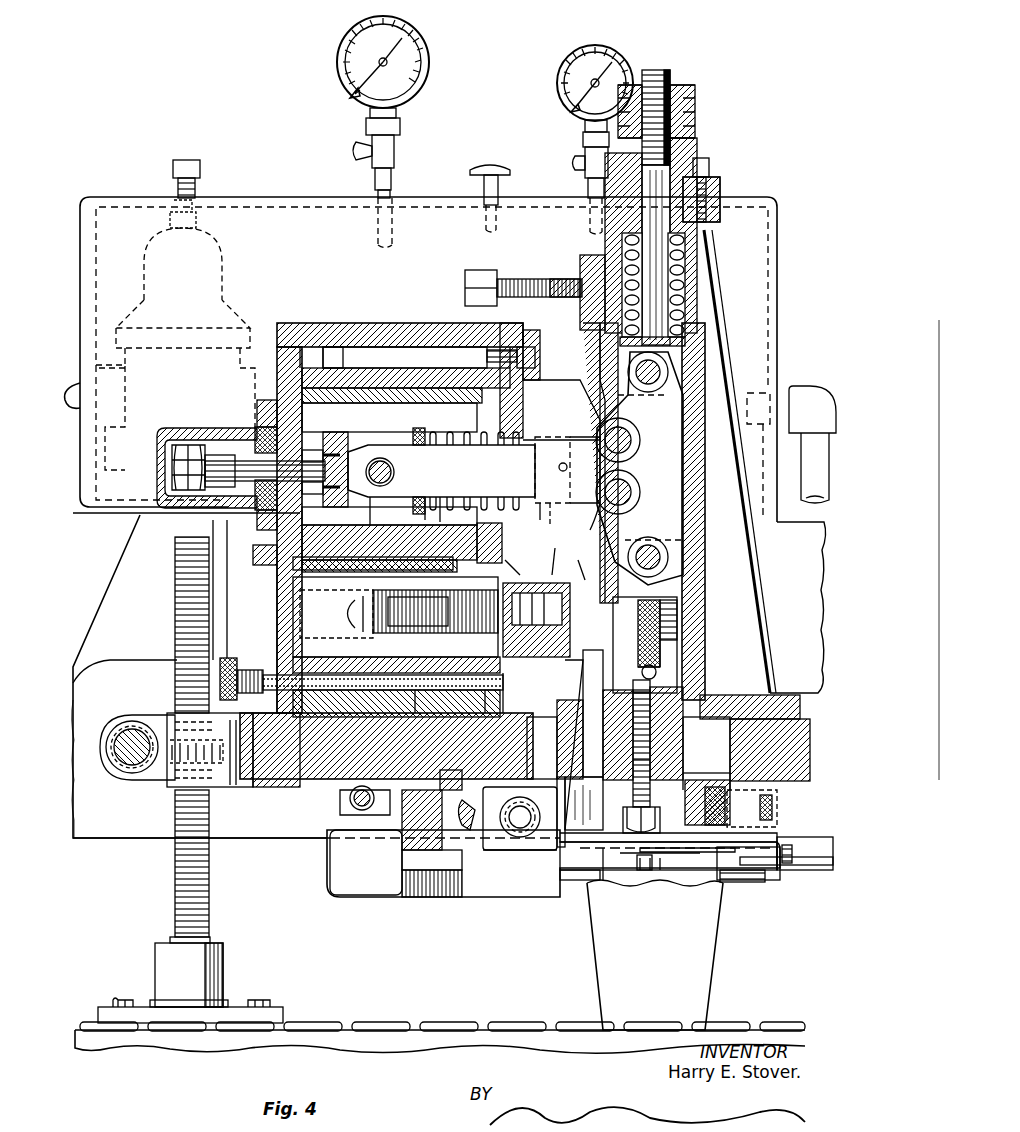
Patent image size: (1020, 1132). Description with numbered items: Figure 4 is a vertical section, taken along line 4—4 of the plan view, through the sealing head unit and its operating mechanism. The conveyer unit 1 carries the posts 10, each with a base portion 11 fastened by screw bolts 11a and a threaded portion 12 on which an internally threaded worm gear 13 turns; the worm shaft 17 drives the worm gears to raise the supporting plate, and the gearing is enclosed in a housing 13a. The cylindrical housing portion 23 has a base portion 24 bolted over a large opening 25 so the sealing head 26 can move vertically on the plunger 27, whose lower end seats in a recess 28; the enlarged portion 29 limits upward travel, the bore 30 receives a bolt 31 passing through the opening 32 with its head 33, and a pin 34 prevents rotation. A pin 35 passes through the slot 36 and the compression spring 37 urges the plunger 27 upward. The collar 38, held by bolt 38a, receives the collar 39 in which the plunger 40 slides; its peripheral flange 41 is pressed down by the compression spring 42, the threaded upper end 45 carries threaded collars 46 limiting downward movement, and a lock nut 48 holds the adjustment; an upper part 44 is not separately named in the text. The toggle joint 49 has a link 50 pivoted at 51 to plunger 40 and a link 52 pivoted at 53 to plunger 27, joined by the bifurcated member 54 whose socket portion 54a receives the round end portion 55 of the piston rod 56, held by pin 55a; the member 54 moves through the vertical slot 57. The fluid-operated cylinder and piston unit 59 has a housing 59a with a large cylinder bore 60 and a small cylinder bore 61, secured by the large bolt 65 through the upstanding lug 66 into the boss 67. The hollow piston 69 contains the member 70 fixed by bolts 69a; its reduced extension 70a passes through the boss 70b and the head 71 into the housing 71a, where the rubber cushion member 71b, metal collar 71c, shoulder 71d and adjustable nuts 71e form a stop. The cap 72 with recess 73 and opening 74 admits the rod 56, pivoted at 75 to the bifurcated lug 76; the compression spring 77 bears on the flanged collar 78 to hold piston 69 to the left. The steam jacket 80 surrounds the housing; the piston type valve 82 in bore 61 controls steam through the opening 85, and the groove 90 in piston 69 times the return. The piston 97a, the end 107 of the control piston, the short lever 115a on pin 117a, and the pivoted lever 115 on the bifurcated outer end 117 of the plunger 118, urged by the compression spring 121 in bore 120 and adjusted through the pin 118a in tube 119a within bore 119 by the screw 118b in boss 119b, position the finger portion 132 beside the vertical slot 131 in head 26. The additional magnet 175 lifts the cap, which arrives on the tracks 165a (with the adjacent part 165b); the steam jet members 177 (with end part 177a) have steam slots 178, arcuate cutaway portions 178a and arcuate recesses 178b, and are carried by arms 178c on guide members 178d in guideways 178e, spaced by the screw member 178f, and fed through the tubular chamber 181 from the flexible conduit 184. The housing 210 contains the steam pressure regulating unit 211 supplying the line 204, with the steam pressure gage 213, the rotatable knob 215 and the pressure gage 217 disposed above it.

The conveyer unit 1 is at (318, 1028).
The receptacle 4 is at (700, 955).
The posts 10 is at (175, 866).
The base portion 11 is at (168, 952).
The screw bolts 11a is at (116, 1000).
The threaded portion 12 is at (178, 595).
The worm gear 13 is at (200, 750).
The housing 13a is at (133, 665).
The worm shaft 17 is at (128, 735).
The cylindrical housing portion 23 is at (713, 292).
The base portion 24 is at (780, 706).
The large opening 25 is at (800, 748).
The sealing head 26 is at (728, 830).
The plunger 27 is at (665, 690).
The recess 28 is at (706, 771).
The enlarged portion 29 is at (706, 745).
The bore 30 is at (635, 740).
The bolt 31 is at (633, 762).
The centrally disposed opening 32 is at (605, 810).
The head 33 is at (637, 828).
The pin 34 is at (688, 855).
The pin 35 is at (655, 668).
The slot 36 is at (660, 640).
The compression spring 37 is at (677, 612).
The collar 38 is at (718, 190).
The bolt 38a is at (706, 180).
The collar 39 is at (690, 144).
The plunger 40 is at (706, 222).
The peripheral flange 41 is at (700, 333).
The compression spring 42 is at (685, 262).
The rod 44 is at (656, 207).
The threaded upper end 45 is at (695, 122).
The threaded collars 46 is at (695, 92).
The lock nut 48 is at (586, 165).
The toggle joint 49 is at (589, 519).
The link 50 is at (690, 410).
The pivotal connection 51 is at (662, 374).
The link 52 is at (648, 520).
The pivotal connection 53 is at (668, 555).
The bifurcated member 54 is at (636, 470).
The socket portion 54a is at (575, 450).
The round end portion 55 is at (557, 517).
The pin 55a is at (559, 465).
The piston rod 56 is at (531, 517).
The vertical slot 57 is at (603, 385).
The fluid-operated cylinder and piston unit 59 is at (392, 323).
The housing 59a is at (350, 335).
The large cylinder bore 60 is at (498, 356).
The small cylinder bore 61 is at (414, 519).
The large bolt 65 is at (562, 280).
The upstanding lug 66 is at (490, 275).
The boss 67 is at (592, 270).
The hollow piston 69 is at (338, 356).
The bolts 69a is at (389, 541).
The member 70 is at (355, 448).
The reduced extension 70a is at (228, 460).
The boss 70b is at (330, 440).
The head 71 is at (278, 392).
The housing 71a is at (175, 428).
The cushion member 71b is at (290, 566).
The metal collar 71c is at (270, 548).
The shoulder 71d is at (262, 430).
The nuts 71e is at (172, 462).
The cap 72 is at (523, 382).
The recess 73 is at (522, 418).
The opening 74 is at (520, 438).
The pivotal connection 75 is at (384, 462).
The bifurcated lug 76 is at (377, 500).
The compression spring 77 is at (460, 510).
The flanged collar 78 is at (441, 471).
The steam jacket 80 is at (410, 347).
The piston type valve 82 is at (489, 543).
The exhaust and inlet opening 85 is at (418, 514).
The groove 90 is at (433, 519).
The piston 97a is at (528, 555).
The end 107 is at (396, 637).
The pivoted lever 115 is at (583, 632).
The short lever 115a is at (589, 560).
The bifurcated outer end 117 is at (550, 700).
The pin 117a is at (566, 550).
The plunger 118 is at (543, 748).
The pin 118a is at (455, 700).
The screw 118b is at (236, 658).
The bore 119 is at (383, 692).
The tube 119a is at (418, 715).
The boss 119b is at (255, 670).
The bore 120 is at (508, 700).
The compression spring 121 is at (485, 700).
The vertical slot 131 is at (560, 850).
The finger portion 132 is at (558, 830).
The tracks 165a is at (818, 865).
The rod end 165b is at (790, 845).
The additional magnet 175 is at (718, 816).
The steam jet members 177 is at (573, 870).
The plate end 177a is at (752, 880).
The steam slots 178 is at (700, 868).
The arcuate cutaway portion 178a is at (647, 870).
The arcuate recess 178b is at (616, 877).
The arms 178c is at (445, 895).
The guide members 178d is at (432, 833).
The guideways 178e is at (312, 838).
The screw member 178f is at (366, 815).
The tubular chamber 181 is at (505, 832).
The flexible conduit 184 is at (475, 820).
The line 204 is at (815, 410).
The housing 210 is at (312, 198).
The steam pressure regulating unit 211 is at (215, 250).
The steam pressure gage 213 is at (337, 62).
The rotatable knob 215 is at (490, 168).
The pressure gage 217 is at (557, 74).